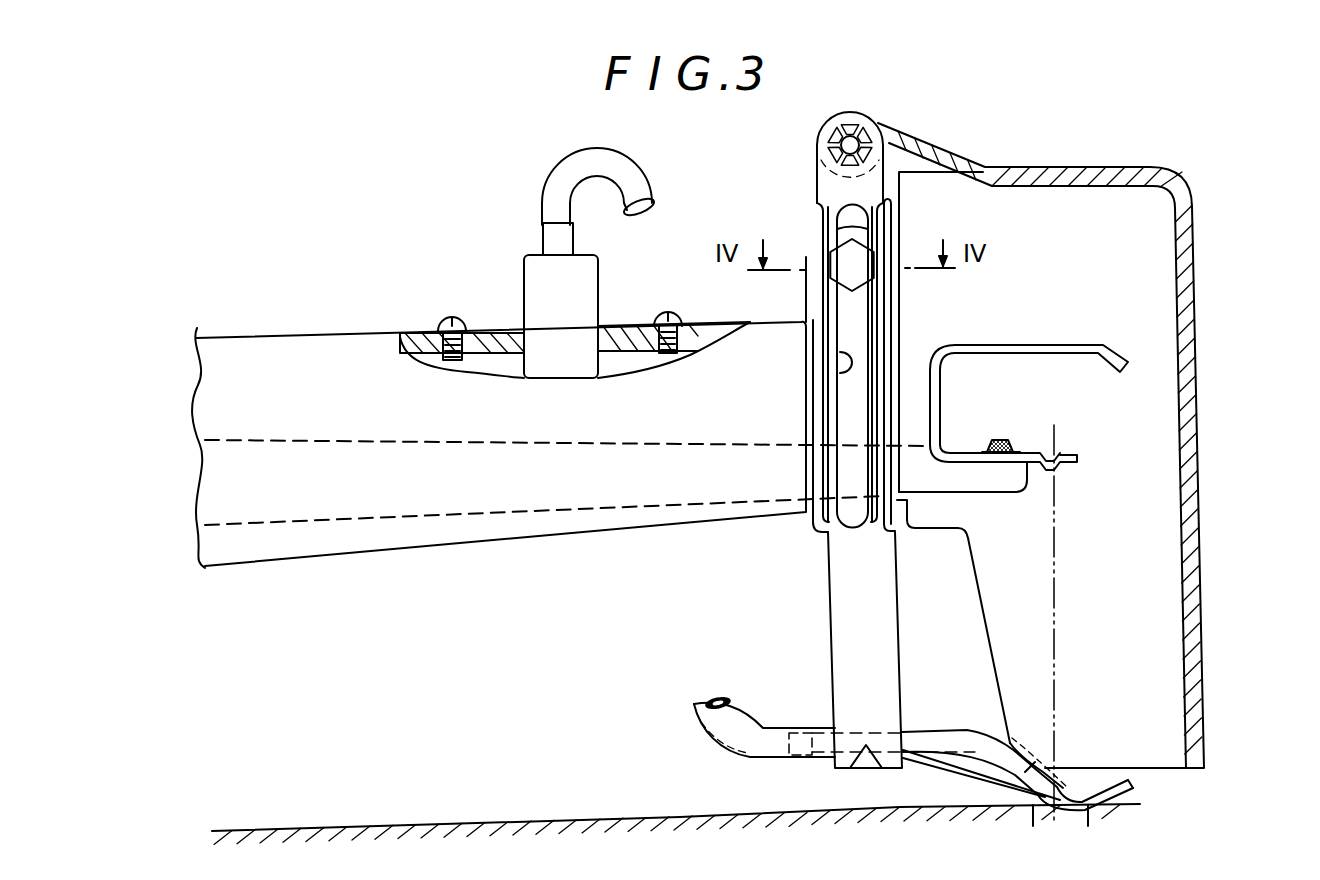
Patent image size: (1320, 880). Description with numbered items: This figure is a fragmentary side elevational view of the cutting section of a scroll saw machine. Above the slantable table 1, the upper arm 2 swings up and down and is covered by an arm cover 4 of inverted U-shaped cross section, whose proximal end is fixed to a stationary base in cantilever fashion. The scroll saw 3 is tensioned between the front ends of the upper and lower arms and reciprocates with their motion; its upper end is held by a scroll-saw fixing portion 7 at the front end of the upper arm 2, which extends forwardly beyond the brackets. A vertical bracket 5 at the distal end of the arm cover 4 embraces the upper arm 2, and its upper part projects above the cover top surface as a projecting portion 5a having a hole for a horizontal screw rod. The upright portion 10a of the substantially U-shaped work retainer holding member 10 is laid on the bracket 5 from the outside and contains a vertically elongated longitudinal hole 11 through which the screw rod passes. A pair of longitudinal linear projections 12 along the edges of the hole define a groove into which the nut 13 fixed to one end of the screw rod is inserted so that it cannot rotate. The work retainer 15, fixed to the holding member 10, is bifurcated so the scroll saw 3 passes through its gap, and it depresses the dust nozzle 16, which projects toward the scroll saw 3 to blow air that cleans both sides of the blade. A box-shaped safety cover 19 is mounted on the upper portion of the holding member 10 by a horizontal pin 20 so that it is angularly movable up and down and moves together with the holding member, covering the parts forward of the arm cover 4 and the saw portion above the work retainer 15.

The slantable table 1 is at (466, 828).
The upper arm 2 is at (557, 512).
The scroll saw 3 is at (1057, 595).
The arm cover 4 is at (283, 336).
The bracket 5 is at (893, 330).
The projecting portion 5a is at (845, 262).
The scroll-saw fixing portion 7 is at (1077, 457).
The work retainer holding member 10 is at (828, 590).
The upright portion 10a is at (835, 665).
The longitudinal hole 11 is at (845, 362).
The longitudinal linear projection 12 is at (885, 340).
The nut 13 is at (806, 258).
The work retainer 15 is at (985, 784).
The dust nozzle 16 is at (970, 732).
The safety cover 19 is at (1198, 385).
The horizontal pin 20 is at (883, 128).